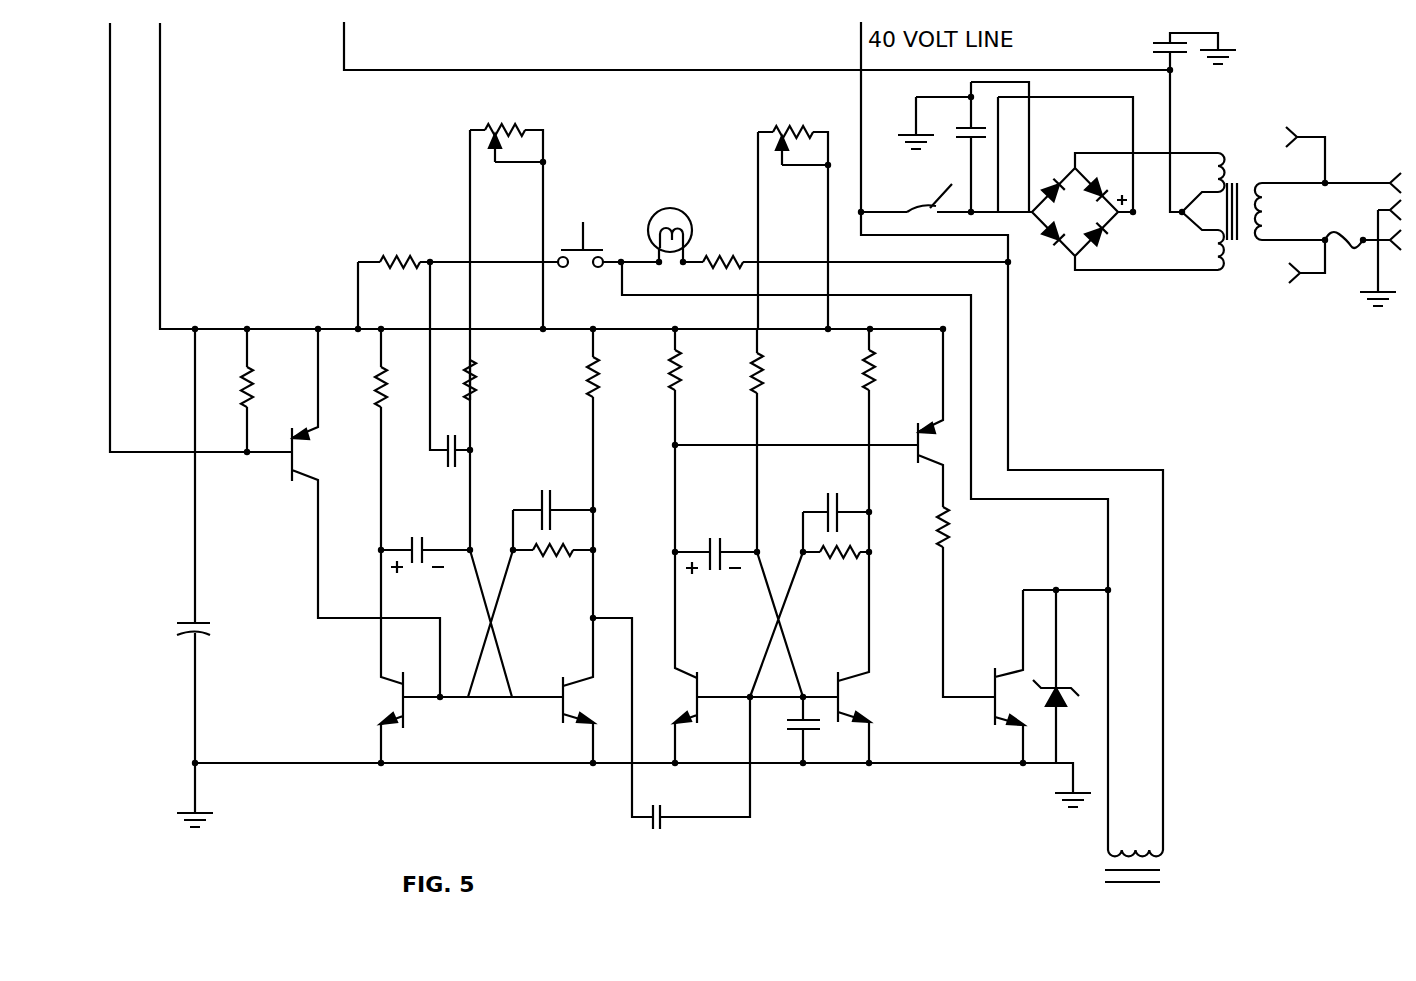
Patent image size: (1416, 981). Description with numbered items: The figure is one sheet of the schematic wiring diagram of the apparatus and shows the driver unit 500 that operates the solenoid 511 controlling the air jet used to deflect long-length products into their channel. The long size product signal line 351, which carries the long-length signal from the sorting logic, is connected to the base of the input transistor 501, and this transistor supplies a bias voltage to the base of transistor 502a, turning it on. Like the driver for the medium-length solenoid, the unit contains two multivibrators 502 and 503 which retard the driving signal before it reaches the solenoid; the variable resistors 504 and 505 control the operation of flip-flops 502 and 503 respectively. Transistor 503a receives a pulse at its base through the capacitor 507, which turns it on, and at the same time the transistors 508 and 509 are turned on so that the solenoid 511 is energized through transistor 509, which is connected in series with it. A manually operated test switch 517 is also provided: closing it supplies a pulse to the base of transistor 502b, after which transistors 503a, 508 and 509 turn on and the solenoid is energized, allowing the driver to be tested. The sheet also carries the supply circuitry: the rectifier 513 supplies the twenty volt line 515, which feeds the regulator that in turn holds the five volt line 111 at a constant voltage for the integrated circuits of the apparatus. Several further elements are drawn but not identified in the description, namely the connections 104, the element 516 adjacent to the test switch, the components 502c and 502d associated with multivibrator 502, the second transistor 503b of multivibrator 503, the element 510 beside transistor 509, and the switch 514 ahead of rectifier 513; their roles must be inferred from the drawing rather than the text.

The long size product signal line 351 is at (110, 100).
The five volt line 111 is at (160, 253).
The 20 volt line 515 is at (582, 68).
The ground 104 is at (274, 766).
The driver unit 500 is at (178, 568).
The input transistor 501 is at (290, 462).
The variable resistor 504 is at (516, 128).
The variable resistor 505 is at (805, 130).
The manually operated test switch 517 is at (592, 247).
The indicator lamp 516 is at (692, 236).
The multivibrator 502 is at (514, 573).
The transistor 502a is at (405, 706).
The transistor 502b is at (560, 705).
The electrolytic capacitor 502c is at (428, 528).
The resistor 502d is at (472, 393).
The multivibrator 503 is at (799, 546).
The transistor 503a is at (699, 706).
The flip-flop transistor 503b is at (840, 701).
The capacitor 507 is at (662, 808).
The transistor 508 is at (917, 457).
The transistor 509 is at (993, 693).
The zener diode 510 is at (1090, 680).
The solenoid 511 is at (1163, 850).
The rectifier 513 is at (1160, 255).
The switch 514 is at (882, 196).